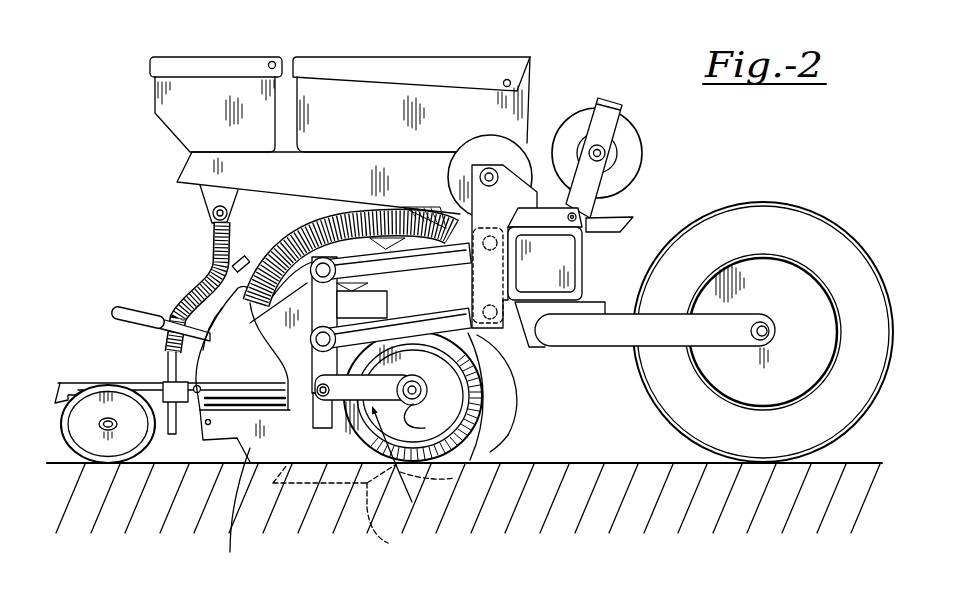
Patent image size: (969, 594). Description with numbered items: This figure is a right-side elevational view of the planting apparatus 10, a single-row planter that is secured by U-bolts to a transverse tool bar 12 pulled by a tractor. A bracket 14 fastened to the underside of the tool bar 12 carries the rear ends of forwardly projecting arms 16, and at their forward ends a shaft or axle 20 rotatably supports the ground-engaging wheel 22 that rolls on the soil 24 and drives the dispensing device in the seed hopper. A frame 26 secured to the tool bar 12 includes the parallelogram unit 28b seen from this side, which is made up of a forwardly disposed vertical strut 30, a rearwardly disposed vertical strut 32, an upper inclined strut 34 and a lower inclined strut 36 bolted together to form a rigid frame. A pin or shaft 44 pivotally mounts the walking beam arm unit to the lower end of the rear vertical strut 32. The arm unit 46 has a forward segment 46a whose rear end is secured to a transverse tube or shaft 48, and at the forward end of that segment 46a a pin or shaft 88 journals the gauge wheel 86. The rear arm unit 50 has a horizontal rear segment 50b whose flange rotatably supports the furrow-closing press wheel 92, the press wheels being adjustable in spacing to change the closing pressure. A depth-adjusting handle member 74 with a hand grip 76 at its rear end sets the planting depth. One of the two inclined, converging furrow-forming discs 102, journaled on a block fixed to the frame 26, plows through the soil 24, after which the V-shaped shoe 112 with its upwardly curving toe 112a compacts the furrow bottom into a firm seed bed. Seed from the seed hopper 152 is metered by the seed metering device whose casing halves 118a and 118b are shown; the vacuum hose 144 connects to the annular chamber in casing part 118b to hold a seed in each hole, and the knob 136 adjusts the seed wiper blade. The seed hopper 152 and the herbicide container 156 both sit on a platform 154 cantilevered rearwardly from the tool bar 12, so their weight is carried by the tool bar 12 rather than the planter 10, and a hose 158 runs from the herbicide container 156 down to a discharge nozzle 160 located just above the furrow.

The planting apparatus 10 is at (565, 69).
The tool bar 12 is at (587, 255).
The bracket 14 is at (592, 300).
The forwardly projecting arms 16 is at (572, 340).
The shaft or axle 20 is at (768, 322).
The ground-engaging wheel 22 is at (772, 200).
The ground or soil 24 is at (572, 457).
The frame 26 is at (476, 340).
The parallelogram unit 28b is at (444, 217).
The forwardly disposed vertical strut 30 is at (477, 278).
The rearwardly disposed vertical strut 32 is at (360, 298).
The upper inclined strut 34 is at (432, 258).
The lower inclined strut 36 is at (424, 387).
The pin or shaft 44 is at (330, 400).
The arm unit 46 is at (401, 462).
The forward segment 46a is at (410, 480).
The transverse tube or shaft 48 is at (318, 395).
The rear arm unit 50 is at (121, 373).
The rear segment 50b is at (73, 387).
The depth-adjusting handle member 74 is at (197, 273).
The hand grip 76 is at (120, 305).
The gauge wheel 86 is at (507, 440).
The pin or shaft 88 is at (425, 420).
The press wheel 92 is at (72, 452).
The furrow-forming disc 102 is at (512, 398).
The V-shaped shoe 112 is at (243, 508).
The toe 112a is at (383, 540).
The casing part 118a is at (203, 348).
The casing part 118b is at (262, 334).
The knob 136 is at (242, 258).
The vacuum hose 144 is at (322, 223).
The seed hopper 152 is at (352, 57).
The platform 154 is at (334, 152).
The herbicide container 156 is at (198, 57).
The hose 158 is at (208, 240).
The discharge nozzle 160 is at (173, 433).